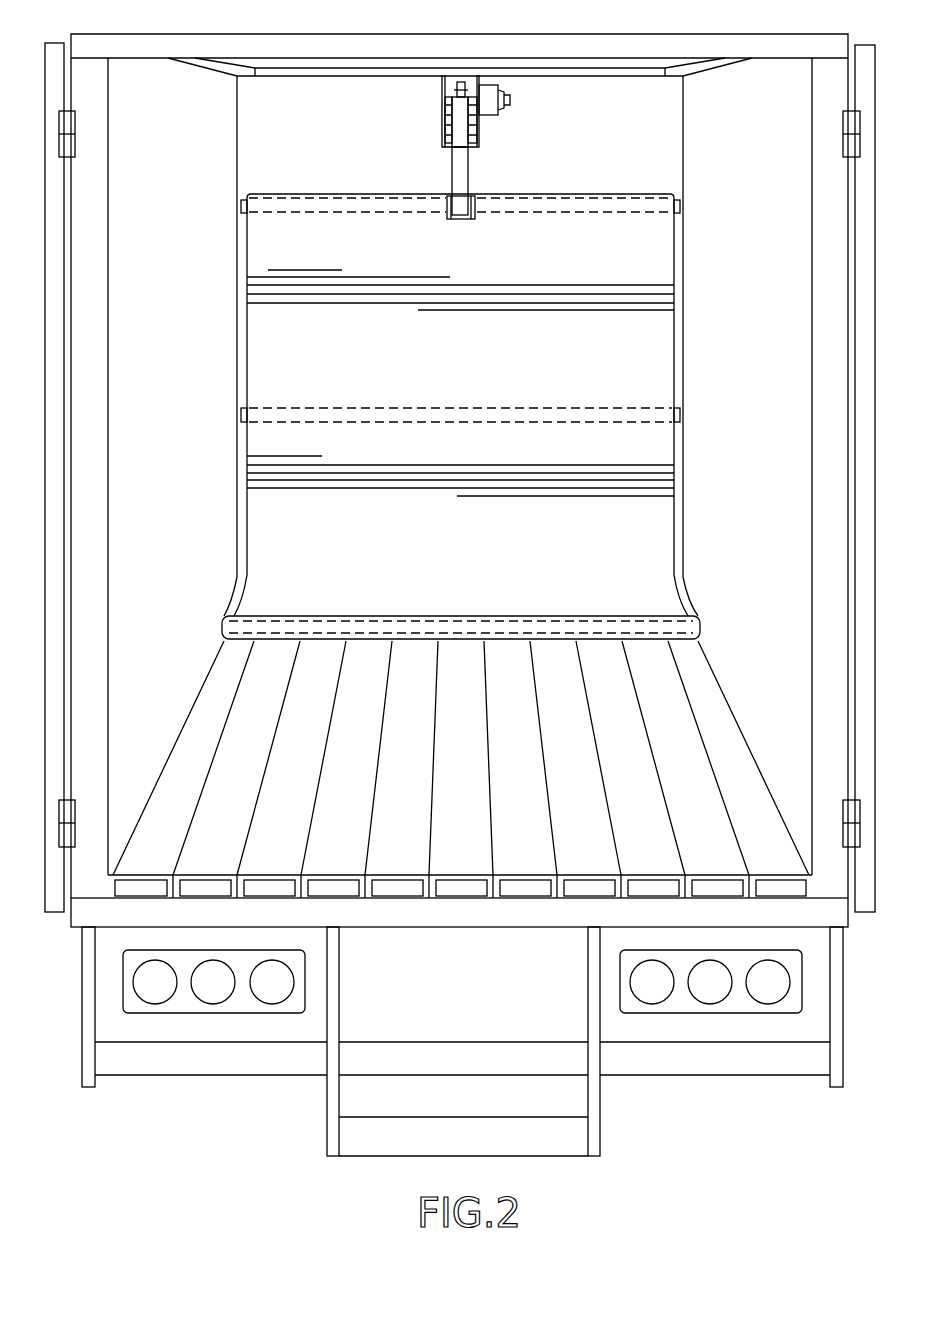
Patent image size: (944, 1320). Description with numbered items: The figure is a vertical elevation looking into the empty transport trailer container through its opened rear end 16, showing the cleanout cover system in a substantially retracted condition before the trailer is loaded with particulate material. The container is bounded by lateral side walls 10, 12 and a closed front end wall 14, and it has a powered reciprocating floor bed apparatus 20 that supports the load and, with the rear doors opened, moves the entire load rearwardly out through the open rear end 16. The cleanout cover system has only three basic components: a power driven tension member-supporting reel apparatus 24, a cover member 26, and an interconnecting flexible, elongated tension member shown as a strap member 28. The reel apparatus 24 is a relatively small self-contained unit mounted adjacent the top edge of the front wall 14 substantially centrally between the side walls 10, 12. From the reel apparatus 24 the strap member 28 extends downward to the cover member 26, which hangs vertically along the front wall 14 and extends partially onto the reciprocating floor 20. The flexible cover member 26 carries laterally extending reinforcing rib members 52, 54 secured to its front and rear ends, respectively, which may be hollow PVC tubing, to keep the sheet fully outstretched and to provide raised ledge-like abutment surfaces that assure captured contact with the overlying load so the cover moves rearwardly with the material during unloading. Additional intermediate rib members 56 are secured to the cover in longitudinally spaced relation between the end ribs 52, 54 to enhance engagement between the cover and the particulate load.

The lateral side wall 10 is at (767, 348).
The lateral side wall 12 is at (185, 348).
The front end wall 14 is at (370, 349).
The open rear end 16 is at (465, 913).
The reciprocating floor bed apparatus 20 is at (283, 795).
The power driven tension member-supporting reel apparatus 24 is at (411, 117).
The cover member 26 is at (699, 270).
The strap member 28 is at (470, 164).
The reinforcing rib member 52 is at (566, 214).
The reinforcing rib member 54 is at (563, 618).
The intermediate rib member 56 is at (389, 408).